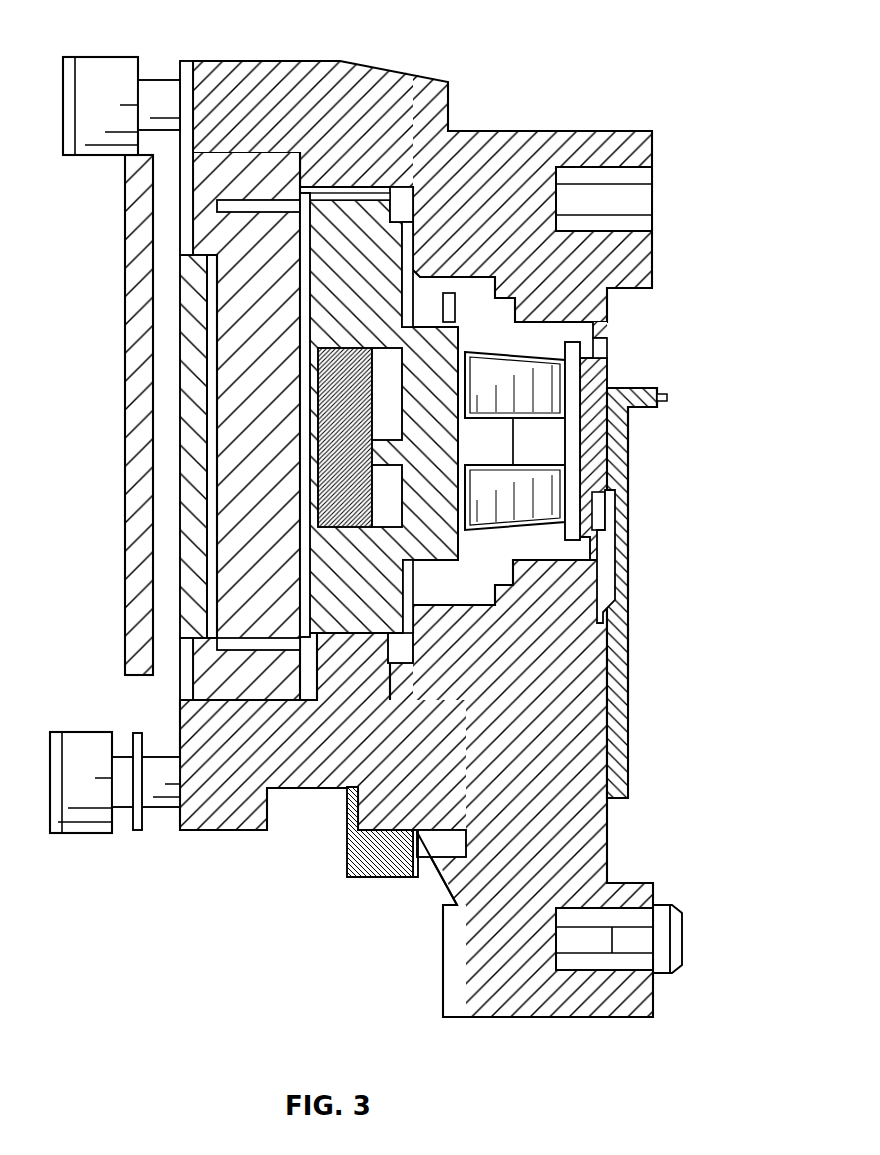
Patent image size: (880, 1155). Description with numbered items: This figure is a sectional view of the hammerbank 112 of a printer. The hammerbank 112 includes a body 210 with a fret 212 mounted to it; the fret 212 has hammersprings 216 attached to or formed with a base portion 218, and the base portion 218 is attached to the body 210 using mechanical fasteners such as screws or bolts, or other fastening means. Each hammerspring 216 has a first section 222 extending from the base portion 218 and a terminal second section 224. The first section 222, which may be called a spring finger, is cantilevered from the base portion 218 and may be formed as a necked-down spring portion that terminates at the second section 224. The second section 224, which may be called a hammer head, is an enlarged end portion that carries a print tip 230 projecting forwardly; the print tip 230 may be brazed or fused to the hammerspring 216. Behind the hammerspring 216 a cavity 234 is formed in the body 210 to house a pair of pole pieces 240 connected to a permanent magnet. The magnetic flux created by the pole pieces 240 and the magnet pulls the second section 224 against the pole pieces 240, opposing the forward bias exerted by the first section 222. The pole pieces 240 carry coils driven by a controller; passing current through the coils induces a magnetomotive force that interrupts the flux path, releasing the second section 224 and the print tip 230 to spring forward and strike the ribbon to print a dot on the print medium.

The hammerbank 112 is at (248, 72).
The body 210 is at (500, 148).
The fret 212 is at (618, 707).
The hammerspring 216 is at (623, 532).
The base portion 218 is at (618, 652).
The first section 222 is at (618, 565).
The second section 224 is at (618, 439).
The print tip 230 is at (668, 399).
The cavity 234 is at (600, 354).
The pole pieces 240 is at (525, 512).